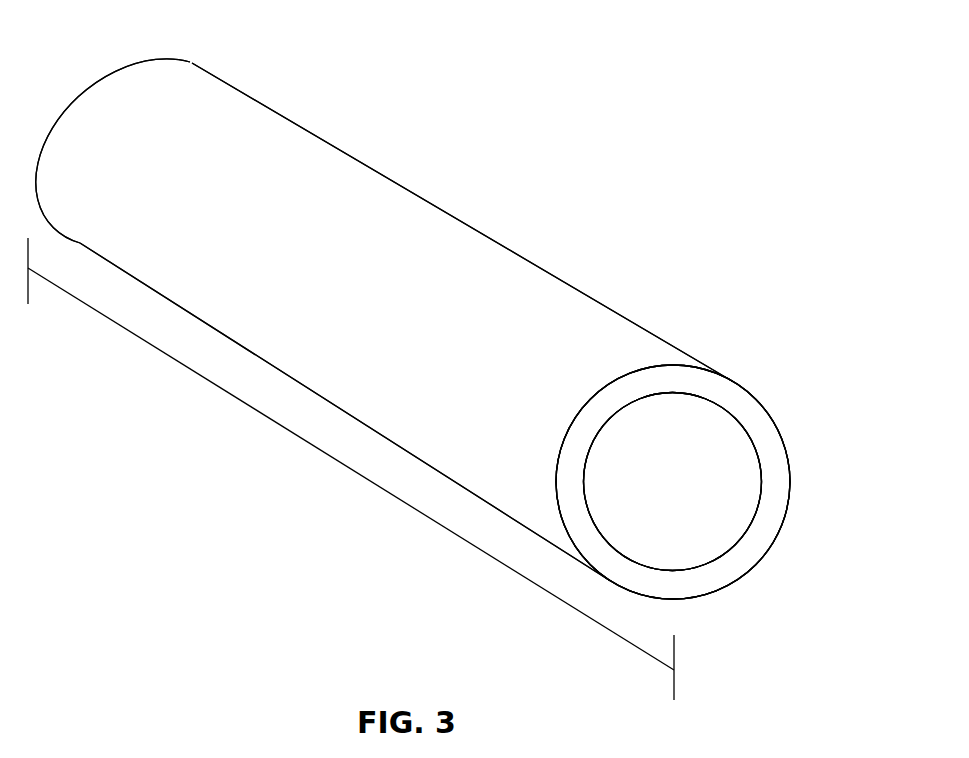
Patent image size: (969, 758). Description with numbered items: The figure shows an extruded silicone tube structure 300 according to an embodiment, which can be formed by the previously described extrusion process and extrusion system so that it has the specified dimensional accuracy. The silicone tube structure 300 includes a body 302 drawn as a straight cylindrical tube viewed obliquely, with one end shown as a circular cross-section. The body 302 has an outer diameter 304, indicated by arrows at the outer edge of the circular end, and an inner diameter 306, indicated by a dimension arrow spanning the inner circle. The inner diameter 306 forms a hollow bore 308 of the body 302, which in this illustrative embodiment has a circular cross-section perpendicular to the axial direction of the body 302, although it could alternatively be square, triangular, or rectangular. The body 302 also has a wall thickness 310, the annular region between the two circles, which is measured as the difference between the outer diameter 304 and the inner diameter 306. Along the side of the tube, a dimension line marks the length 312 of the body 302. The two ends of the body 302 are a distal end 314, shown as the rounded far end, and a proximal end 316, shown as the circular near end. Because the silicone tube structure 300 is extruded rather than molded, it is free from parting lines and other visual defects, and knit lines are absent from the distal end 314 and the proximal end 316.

The silicone tube structure 300 is at (501, 126).
The body 302 is at (542, 268).
The outer diameter 304 is at (512, 483).
The inner diameter 306 is at (673, 554).
The hollow bore 308 is at (734, 456).
The wall thickness 310 is at (737, 573).
The length 312 is at (222, 390).
The distal end 314 is at (254, 69).
The proximal end 316 is at (755, 341).